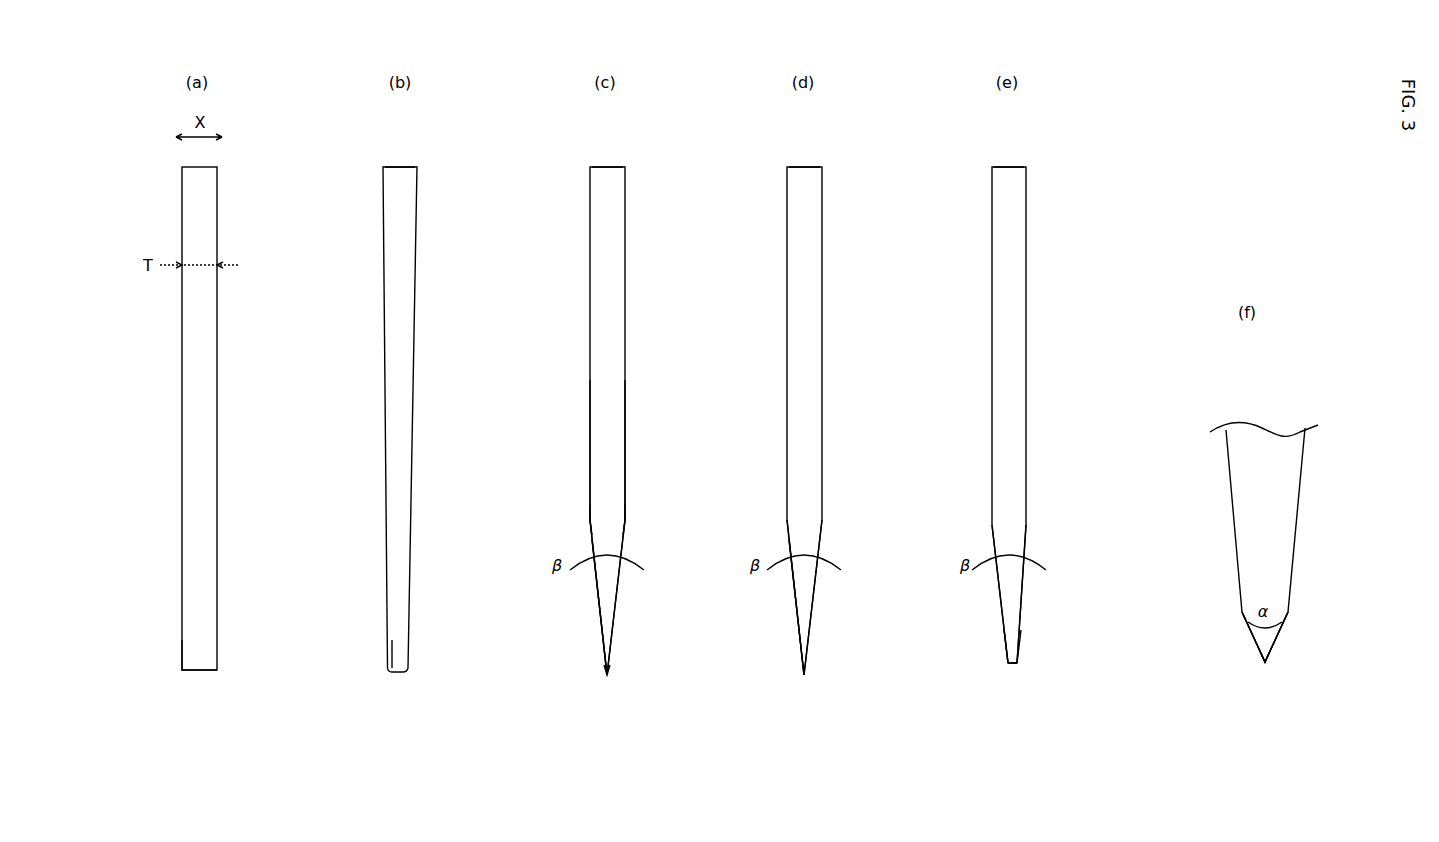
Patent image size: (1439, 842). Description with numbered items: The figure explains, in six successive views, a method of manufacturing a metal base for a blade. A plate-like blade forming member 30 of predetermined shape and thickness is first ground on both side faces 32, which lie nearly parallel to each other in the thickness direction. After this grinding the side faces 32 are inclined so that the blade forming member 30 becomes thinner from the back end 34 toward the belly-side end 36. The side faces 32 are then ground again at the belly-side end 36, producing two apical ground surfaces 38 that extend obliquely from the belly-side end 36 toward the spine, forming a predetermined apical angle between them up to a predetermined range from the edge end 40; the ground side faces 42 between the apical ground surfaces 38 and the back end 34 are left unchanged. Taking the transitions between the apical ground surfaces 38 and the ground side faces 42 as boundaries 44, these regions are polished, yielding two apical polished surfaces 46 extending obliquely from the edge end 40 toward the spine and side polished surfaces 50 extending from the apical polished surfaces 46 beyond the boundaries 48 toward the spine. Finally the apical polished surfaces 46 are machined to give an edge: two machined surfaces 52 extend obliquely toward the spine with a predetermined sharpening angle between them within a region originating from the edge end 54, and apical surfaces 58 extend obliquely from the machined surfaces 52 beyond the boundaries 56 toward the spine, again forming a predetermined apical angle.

The blade forming member 30 is at (168, 198).
The side faces 32 is at (182, 355).
The back end 34 is at (400, 167).
The belly-side end 36 is at (193, 650).
The apical ground surfaces 38 is at (598, 593).
The edge end 40 is at (607, 678).
The ground side faces 42 is at (590, 445).
The boundaries 44 is at (590, 527).
The apical polished surfaces 46 is at (795, 593).
The boundaries 48 is at (787, 527).
The side polished surfaces 50 is at (787, 445).
The machined surfaces 52 is at (1006, 665).
The edge end 54 is at (1012, 668).
The boundaries 56 is at (1006, 662).
The apical surfaces 58 is at (1000, 595).